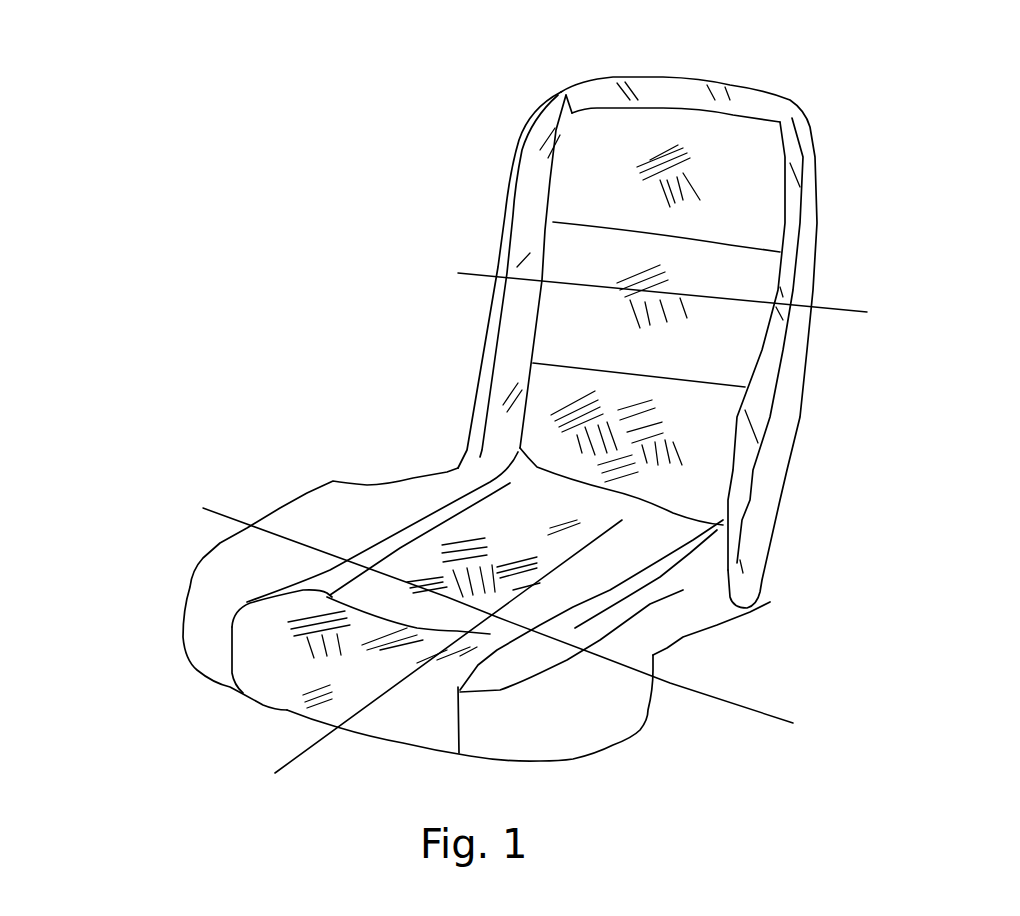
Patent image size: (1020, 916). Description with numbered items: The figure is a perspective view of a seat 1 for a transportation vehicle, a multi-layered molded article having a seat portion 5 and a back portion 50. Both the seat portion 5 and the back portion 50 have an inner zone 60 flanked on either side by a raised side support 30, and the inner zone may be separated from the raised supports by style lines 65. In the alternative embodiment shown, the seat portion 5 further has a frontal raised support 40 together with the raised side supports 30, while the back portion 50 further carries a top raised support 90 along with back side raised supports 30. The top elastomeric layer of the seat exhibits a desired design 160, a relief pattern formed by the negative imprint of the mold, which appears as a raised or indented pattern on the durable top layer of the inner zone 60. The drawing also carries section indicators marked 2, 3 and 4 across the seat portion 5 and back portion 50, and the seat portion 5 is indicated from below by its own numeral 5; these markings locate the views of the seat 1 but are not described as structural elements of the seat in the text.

The seat 1 is at (387, 340).
The section line 2- 2 is at (173, 542).
The section line 3- 3 is at (470, 305).
The section line 4- 4 is at (783, 597).
The seat portion 5 is at (577, 769).
The raised side support 30 is at (550, 165).
The frontal raised support 40 is at (267, 630).
The back portion 50 is at (832, 181).
The inner zone 60 is at (752, 167).
The style lines 65 is at (750, 117).
The top raised support 90 is at (700, 85).
The design 160 is at (657, 415).